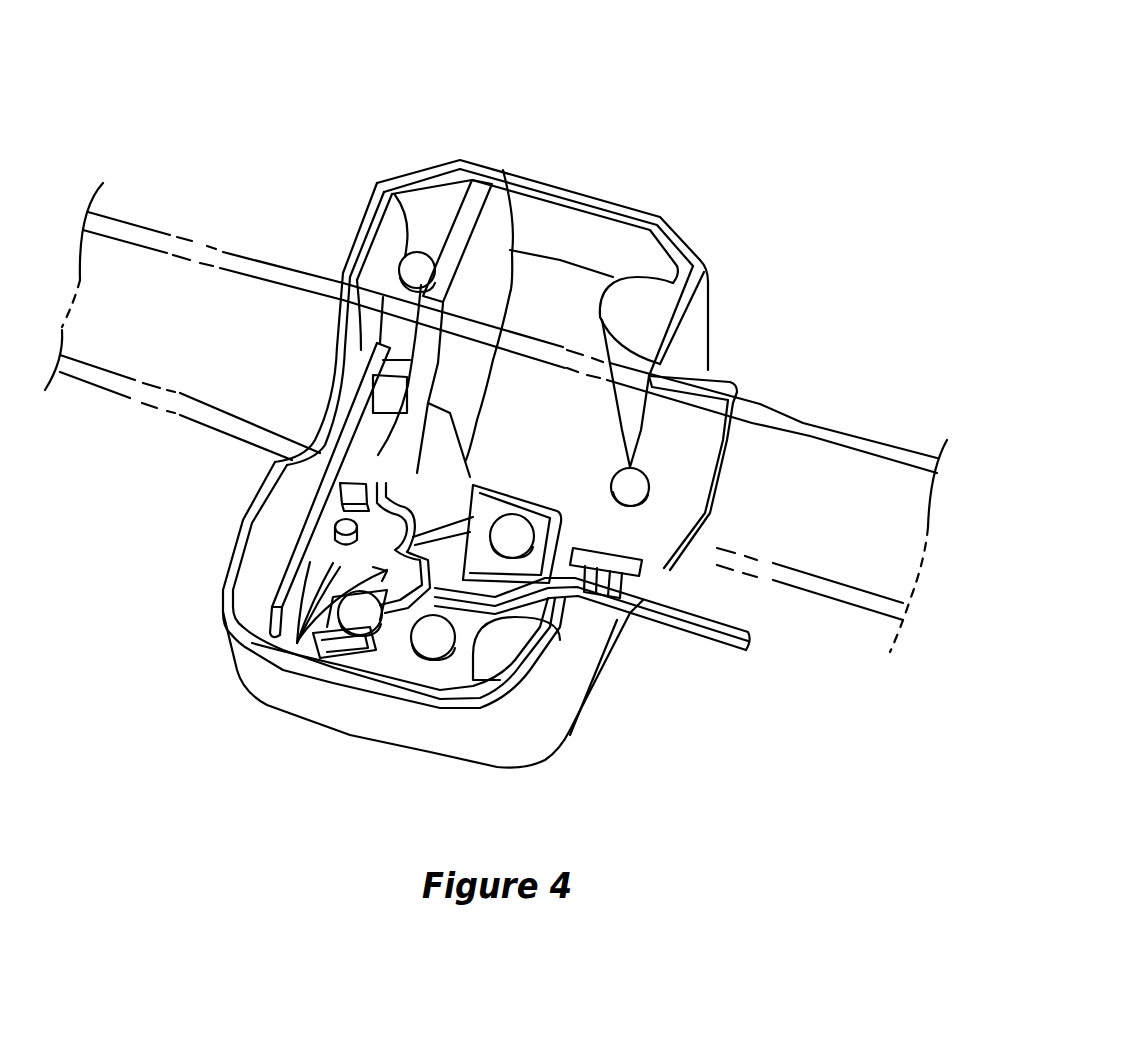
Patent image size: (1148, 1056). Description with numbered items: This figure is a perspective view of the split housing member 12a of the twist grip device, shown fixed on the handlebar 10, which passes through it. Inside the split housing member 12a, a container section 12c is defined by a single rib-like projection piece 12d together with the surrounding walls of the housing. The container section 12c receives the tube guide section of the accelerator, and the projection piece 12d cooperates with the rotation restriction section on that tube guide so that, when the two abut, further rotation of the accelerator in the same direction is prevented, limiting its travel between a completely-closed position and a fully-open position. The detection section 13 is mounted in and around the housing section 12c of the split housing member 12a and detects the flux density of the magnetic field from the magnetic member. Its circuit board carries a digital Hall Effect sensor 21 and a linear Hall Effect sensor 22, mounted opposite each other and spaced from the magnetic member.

The handlebar 10 is at (853, 435).
The split housing member 12a is at (597, 193).
The container section 12c is at (430, 212).
The rib-like projection piece 12d is at (485, 238).
The digital Hall Effect sensor 21 is at (385, 403).
The linear Hall Effect sensor 22 is at (380, 488).
The detection section 13 is at (325, 547).